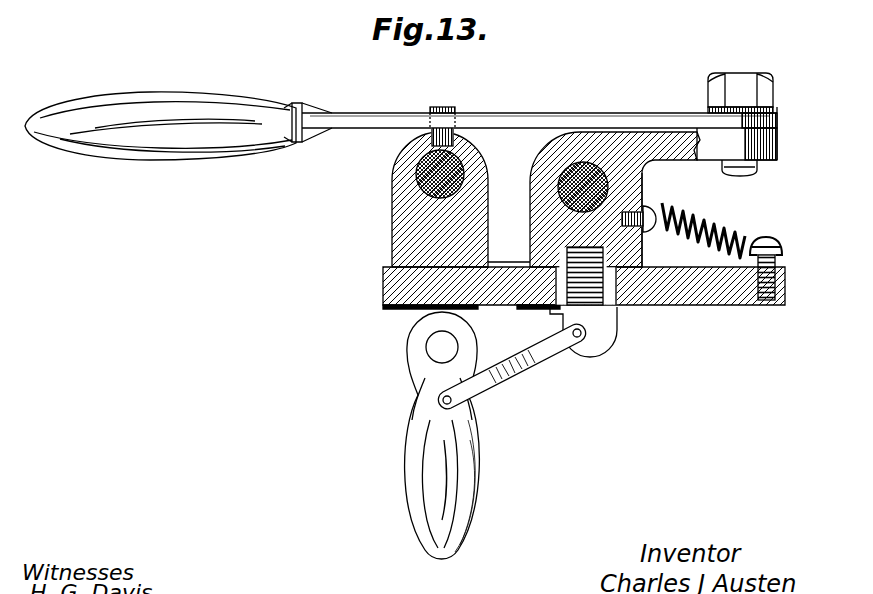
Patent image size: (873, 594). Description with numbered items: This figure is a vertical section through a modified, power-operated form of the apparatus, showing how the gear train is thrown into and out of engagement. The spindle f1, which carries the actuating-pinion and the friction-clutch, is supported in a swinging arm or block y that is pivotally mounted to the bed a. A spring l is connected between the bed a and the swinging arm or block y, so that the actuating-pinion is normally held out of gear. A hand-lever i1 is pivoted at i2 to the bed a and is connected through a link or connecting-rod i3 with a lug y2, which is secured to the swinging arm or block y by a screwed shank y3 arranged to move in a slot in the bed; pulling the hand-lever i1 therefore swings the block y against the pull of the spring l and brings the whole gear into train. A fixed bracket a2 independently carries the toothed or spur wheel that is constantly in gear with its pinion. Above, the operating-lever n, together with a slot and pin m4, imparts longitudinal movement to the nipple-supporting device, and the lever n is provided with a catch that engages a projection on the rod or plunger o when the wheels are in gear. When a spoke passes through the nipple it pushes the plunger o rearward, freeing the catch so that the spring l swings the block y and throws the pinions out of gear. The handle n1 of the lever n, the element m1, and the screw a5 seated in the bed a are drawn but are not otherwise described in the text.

The handle of arm n1 is at (178, 126).
The operating-lever n is at (652, 118).
The pin m4 is at (443, 107).
The rod or plunger o is at (403, 162).
The block m1 is at (392, 178).
The fixed bracket a2 is at (440, 219).
The spindle f1 is at (560, 180).
The swinging arm or block y is at (626, 172).
The screwed shank y3 is at (546, 261).
The spring l is at (712, 220).
The bed a is at (688, 284).
The screw a5 is at (558, 300).
The lug y2 is at (600, 342).
The pivot of hand-lever i2 is at (445, 352).
The link or connecting-rod i3 is at (512, 372).
The hand-lever i1 is at (446, 486).